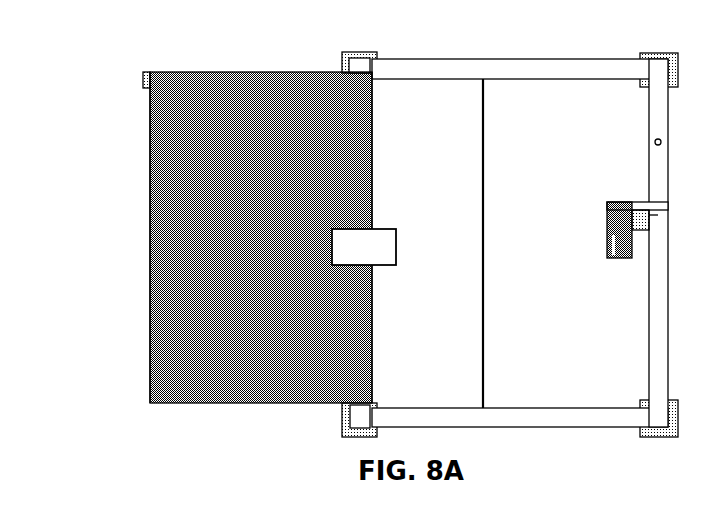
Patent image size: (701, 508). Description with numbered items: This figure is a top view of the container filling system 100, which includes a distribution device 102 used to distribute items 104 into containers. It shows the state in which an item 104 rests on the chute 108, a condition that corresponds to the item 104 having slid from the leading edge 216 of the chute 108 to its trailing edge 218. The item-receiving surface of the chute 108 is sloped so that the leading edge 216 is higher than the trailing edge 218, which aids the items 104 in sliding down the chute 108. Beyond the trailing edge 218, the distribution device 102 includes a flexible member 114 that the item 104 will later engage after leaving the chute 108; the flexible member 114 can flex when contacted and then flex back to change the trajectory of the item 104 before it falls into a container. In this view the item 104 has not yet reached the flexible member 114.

The container filling system 100 is at (108, 82).
The distribution device 102 is at (488, 418).
The item 104 is at (364, 247).
The chute 108 is at (168, 117).
The flexible member 114 is at (483, 128).
The leading edge 216 is at (150, 249).
The trailing edge 218 is at (372, 330).